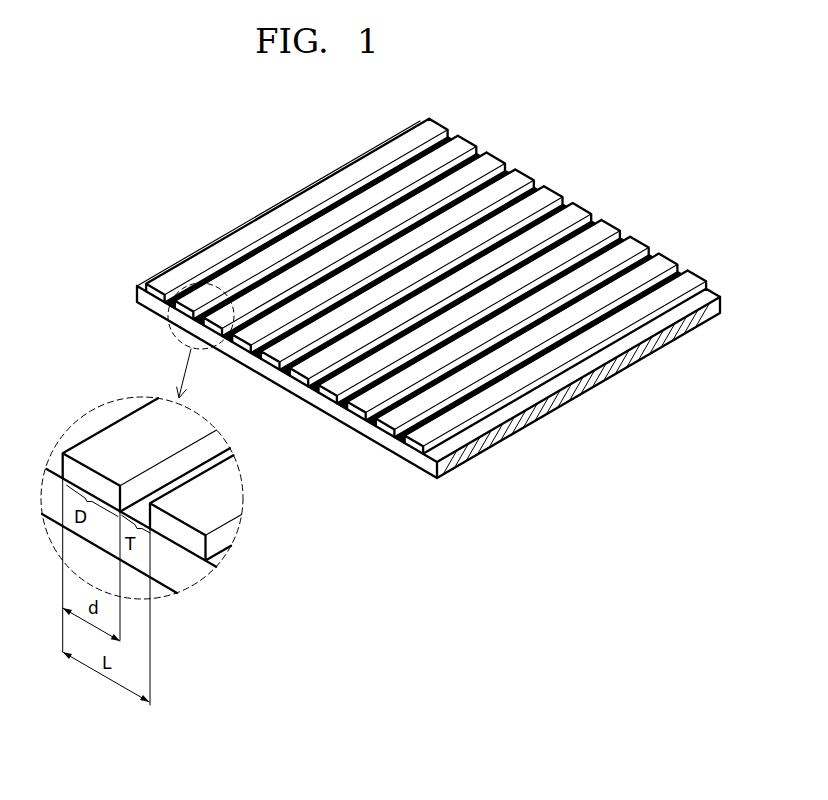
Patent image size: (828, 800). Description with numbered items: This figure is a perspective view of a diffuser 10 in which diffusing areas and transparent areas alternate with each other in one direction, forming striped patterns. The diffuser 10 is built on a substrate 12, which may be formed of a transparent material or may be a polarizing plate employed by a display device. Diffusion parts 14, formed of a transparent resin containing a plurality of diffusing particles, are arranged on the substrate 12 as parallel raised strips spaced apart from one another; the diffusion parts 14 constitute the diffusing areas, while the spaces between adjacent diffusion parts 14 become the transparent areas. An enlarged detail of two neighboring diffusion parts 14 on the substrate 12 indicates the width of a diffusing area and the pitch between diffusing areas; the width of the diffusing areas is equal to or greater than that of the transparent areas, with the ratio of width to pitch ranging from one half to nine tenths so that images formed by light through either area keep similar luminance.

The diffuser 10 is at (172, 222).
The substrate 12 is at (193, 577).
The diffusion parts 14 is at (221, 551).